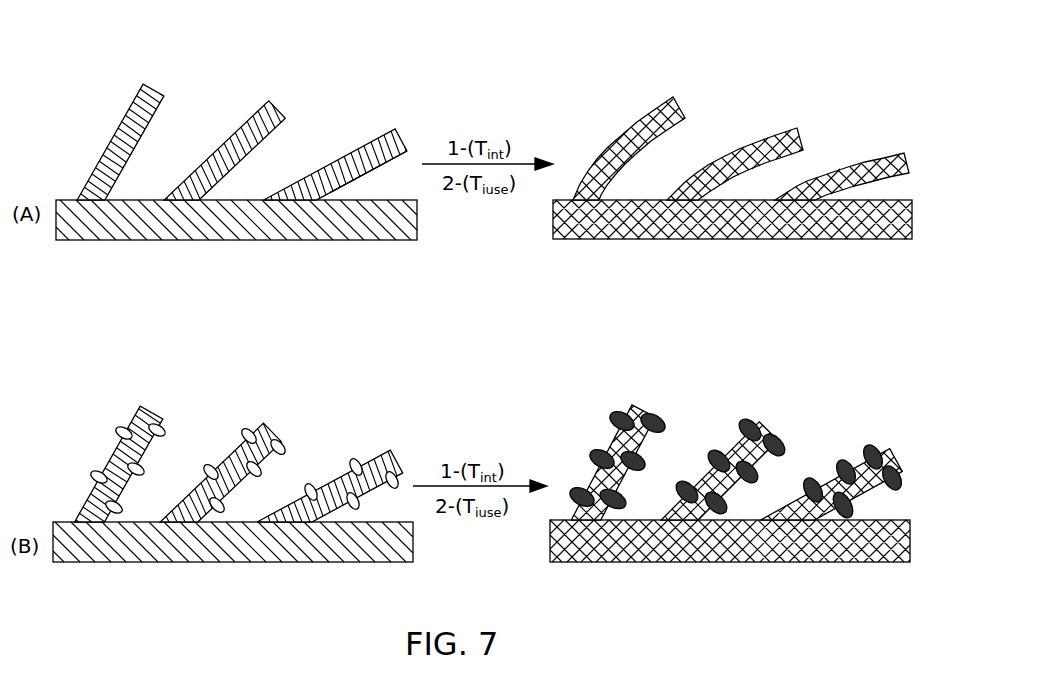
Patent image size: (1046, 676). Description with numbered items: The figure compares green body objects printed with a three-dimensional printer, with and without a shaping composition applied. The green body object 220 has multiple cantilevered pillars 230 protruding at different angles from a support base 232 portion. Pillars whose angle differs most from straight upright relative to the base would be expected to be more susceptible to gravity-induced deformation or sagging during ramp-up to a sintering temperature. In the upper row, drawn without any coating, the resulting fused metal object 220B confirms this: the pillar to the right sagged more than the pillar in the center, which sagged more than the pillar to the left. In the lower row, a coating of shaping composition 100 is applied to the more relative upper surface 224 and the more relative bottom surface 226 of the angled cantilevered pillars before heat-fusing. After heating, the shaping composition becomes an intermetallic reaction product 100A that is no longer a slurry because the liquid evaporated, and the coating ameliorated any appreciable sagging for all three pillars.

The green body object 220 is at (116, 133).
The cantilevered pillars 230 is at (177, 70).
The upper surface 224 is at (360, 135).
The bottom surface 226 is at (384, 187).
The support base 232 is at (180, 223).
The fused metal object 220B is at (845, 177).
The shaping composition 100 is at (328, 478).
The intermetallic reaction product 100A is at (617, 415).